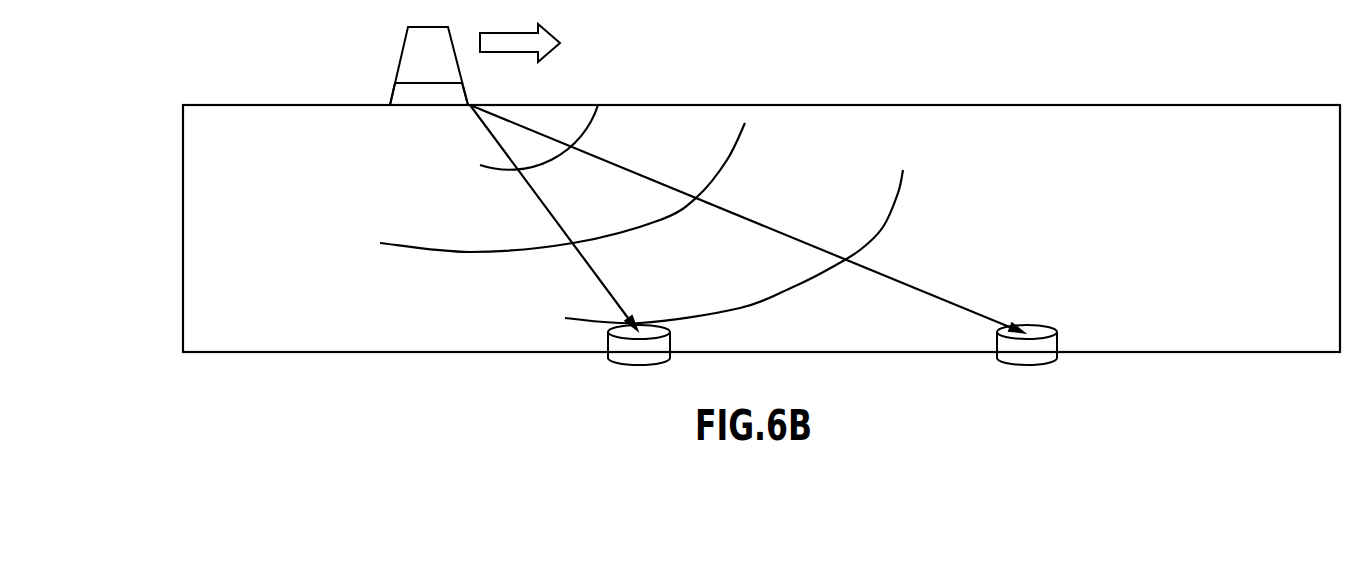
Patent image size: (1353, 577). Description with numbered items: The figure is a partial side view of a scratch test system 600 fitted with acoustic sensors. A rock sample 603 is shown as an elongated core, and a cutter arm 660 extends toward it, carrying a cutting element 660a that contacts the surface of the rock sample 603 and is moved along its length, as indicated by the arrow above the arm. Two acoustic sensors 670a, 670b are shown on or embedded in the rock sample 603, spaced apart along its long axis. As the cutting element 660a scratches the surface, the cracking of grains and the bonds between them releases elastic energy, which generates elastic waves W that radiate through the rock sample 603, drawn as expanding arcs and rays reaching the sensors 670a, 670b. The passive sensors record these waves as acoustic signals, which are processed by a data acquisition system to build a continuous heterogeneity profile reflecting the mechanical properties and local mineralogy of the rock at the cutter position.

The scratch test system 600 is at (185, 77).
The rock sample 603 is at (1178, 118).
The cutter arm 660 is at (410, 52).
The cutting element 660a is at (398, 97).
The acoustic sensor 670a is at (638, 352).
The acoustic sensor 670b is at (1033, 355).